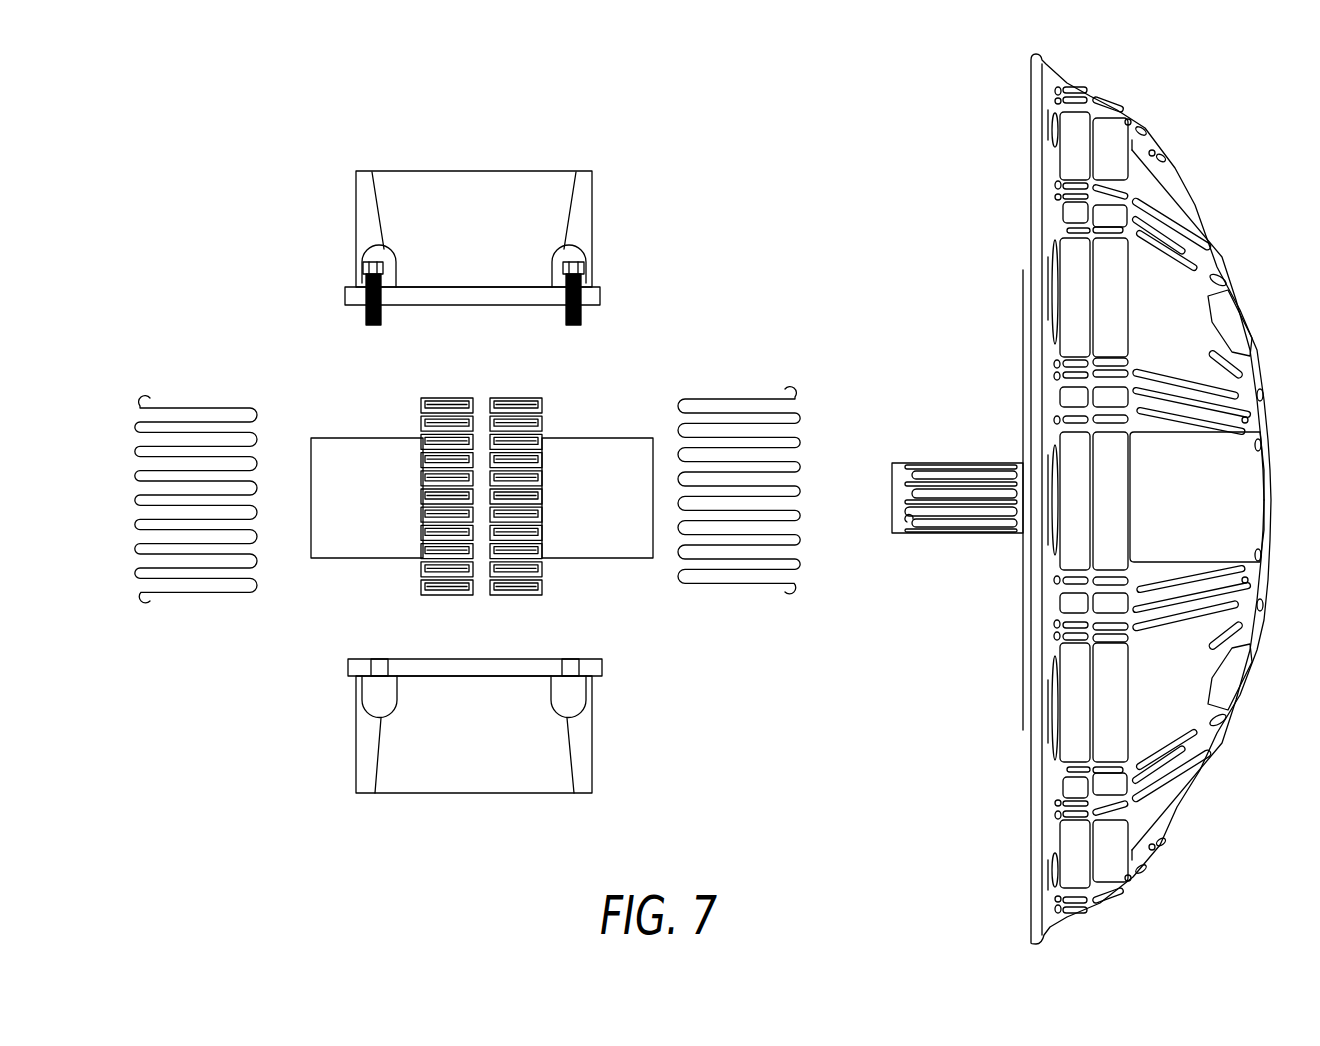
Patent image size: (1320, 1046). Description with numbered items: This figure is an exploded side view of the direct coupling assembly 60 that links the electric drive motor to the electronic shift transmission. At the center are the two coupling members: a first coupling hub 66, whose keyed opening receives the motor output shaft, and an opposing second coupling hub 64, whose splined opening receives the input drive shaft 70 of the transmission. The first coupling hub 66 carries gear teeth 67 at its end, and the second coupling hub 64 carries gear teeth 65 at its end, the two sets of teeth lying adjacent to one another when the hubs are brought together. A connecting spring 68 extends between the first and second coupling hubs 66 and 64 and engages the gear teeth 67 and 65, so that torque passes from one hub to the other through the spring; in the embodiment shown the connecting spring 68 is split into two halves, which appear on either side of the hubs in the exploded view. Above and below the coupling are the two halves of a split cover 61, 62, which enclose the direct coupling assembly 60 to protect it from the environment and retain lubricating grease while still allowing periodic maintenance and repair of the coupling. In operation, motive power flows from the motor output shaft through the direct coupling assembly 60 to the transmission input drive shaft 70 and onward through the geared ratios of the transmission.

The direct coupling assembly 60 is at (348, 120).
The split cover 61 is at (483, 190).
The split cover 62 is at (440, 770).
The second coupling hub 64 is at (587, 445).
The gear teeth 65 is at (520, 397).
The first coupling hub 66 is at (335, 449).
The gear teeth 67 is at (443, 399).
The connecting spring 68 is at (182, 596).
The input drive shaft 70 is at (950, 535).